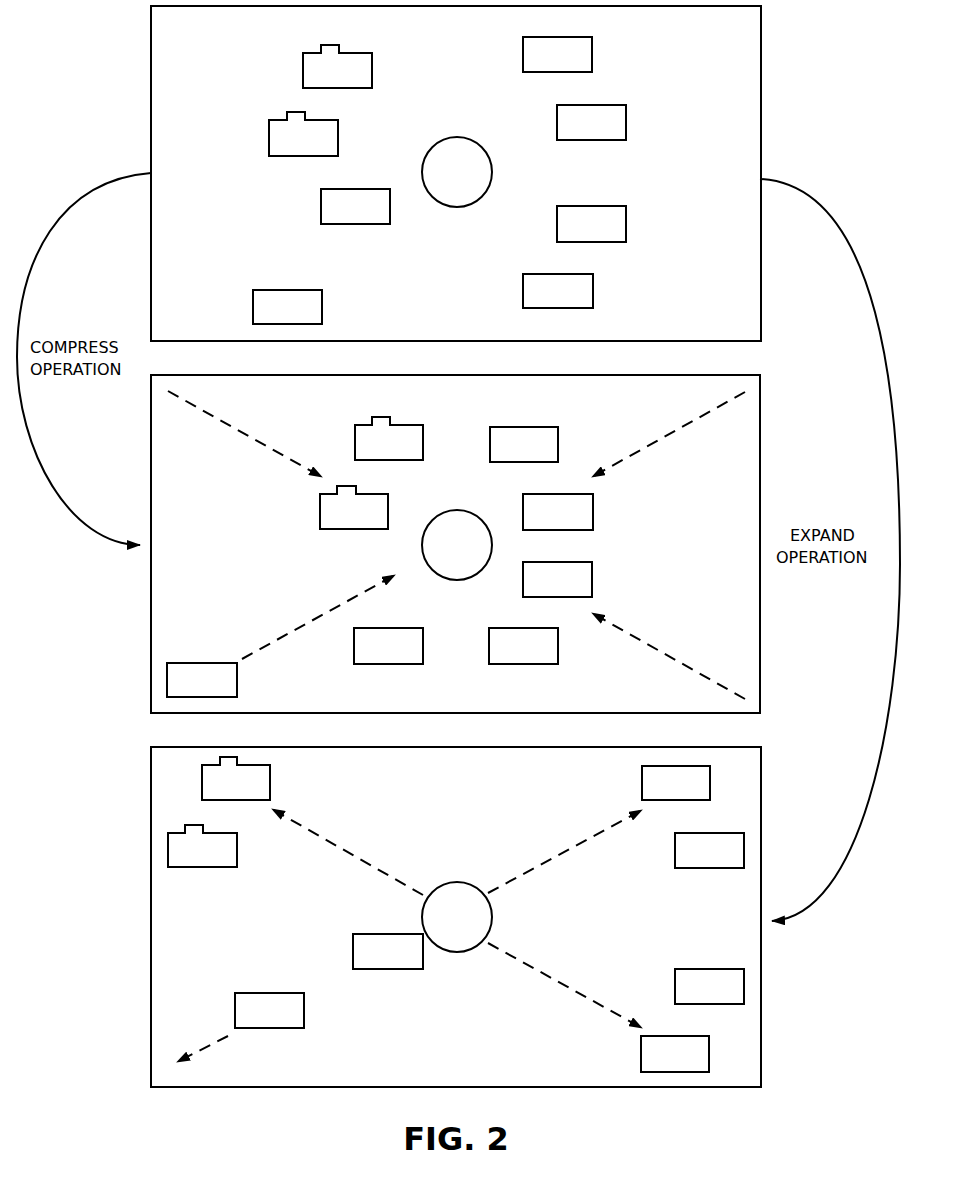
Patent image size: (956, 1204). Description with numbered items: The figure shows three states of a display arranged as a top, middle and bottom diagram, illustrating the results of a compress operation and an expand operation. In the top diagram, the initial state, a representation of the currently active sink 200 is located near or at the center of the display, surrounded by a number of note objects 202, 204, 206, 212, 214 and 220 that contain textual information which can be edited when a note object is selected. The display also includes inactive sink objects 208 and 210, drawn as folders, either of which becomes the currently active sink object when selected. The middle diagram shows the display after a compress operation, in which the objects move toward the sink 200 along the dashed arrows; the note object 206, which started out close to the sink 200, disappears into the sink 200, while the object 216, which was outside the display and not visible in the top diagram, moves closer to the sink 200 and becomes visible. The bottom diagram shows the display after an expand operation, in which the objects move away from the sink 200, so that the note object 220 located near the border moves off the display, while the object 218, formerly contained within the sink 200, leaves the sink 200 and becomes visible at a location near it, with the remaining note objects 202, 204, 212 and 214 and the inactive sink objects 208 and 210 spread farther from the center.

The currently active sink 200 is at (457, 544).
The note object 202 is at (600, 418).
The note object 204 is at (633, 486).
The note object 206 is at (312, 608).
The inactive sink object 208 is at (278, 489).
The inactive sink object 210 is at (312, 422).
The note object 212 is at (599, 673).
The note object 214 is at (633, 605).
The object 216 is at (202, 680).
The object 218 is at (388, 951).
The note object 220 is at (338, 477).